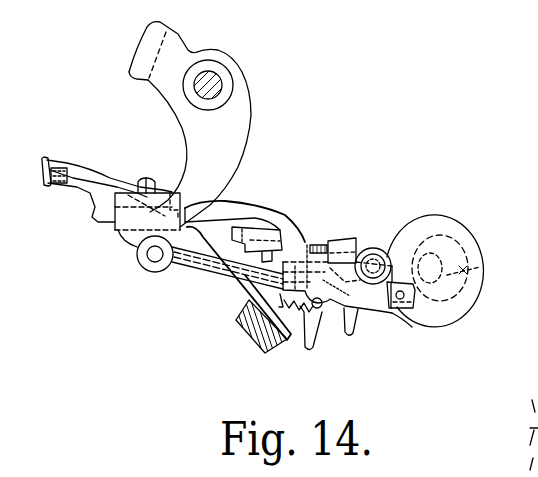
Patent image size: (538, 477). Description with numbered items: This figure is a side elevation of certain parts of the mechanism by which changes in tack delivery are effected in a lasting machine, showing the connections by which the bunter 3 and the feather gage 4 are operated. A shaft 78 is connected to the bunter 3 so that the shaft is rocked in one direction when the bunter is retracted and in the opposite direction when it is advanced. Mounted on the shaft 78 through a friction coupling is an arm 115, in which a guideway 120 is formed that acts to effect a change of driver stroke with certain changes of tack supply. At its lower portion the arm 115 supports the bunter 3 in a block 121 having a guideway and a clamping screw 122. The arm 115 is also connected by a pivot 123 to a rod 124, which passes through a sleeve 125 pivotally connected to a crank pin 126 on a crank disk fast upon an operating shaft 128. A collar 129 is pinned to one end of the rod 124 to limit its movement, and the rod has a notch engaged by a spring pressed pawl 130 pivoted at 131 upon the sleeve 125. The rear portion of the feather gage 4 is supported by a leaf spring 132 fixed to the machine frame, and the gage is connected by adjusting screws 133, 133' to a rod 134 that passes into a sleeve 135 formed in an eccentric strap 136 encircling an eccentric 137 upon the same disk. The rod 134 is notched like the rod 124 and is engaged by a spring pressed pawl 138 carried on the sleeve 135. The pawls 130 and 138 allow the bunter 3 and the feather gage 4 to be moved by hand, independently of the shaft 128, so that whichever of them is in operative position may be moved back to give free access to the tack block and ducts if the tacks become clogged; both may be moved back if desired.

The bunter 3 is at (47, 184).
The feather gage 4 is at (62, 158).
The shaft 78 is at (222, 82).
The arm 115 is at (242, 129).
The guideway 120 is at (160, 36).
The block 121 is at (126, 229).
The clamping screw 122 is at (146, 180).
The pivot 123 is at (153, 260).
The rod 124 is at (215, 265).
The sleeve 125 is at (384, 310).
The crank pin 126 is at (392, 262).
The shaft 128 is at (452, 250).
The collar 129 is at (428, 268).
The spring pressed pawl 130 is at (309, 350).
The pivot 131 is at (305, 321).
The leaf spring 132 is at (240, 296).
The adjusting screw 133 is at (254, 207).
The adjusting screw 133' is at (298, 227).
The rod 134 is at (340, 242).
The sleeve 135 is at (358, 247).
The eccentric strap 136 is at (480, 297).
The eccentric 137 is at (480, 267).
The spring pressed pawl 138 is at (357, 335).